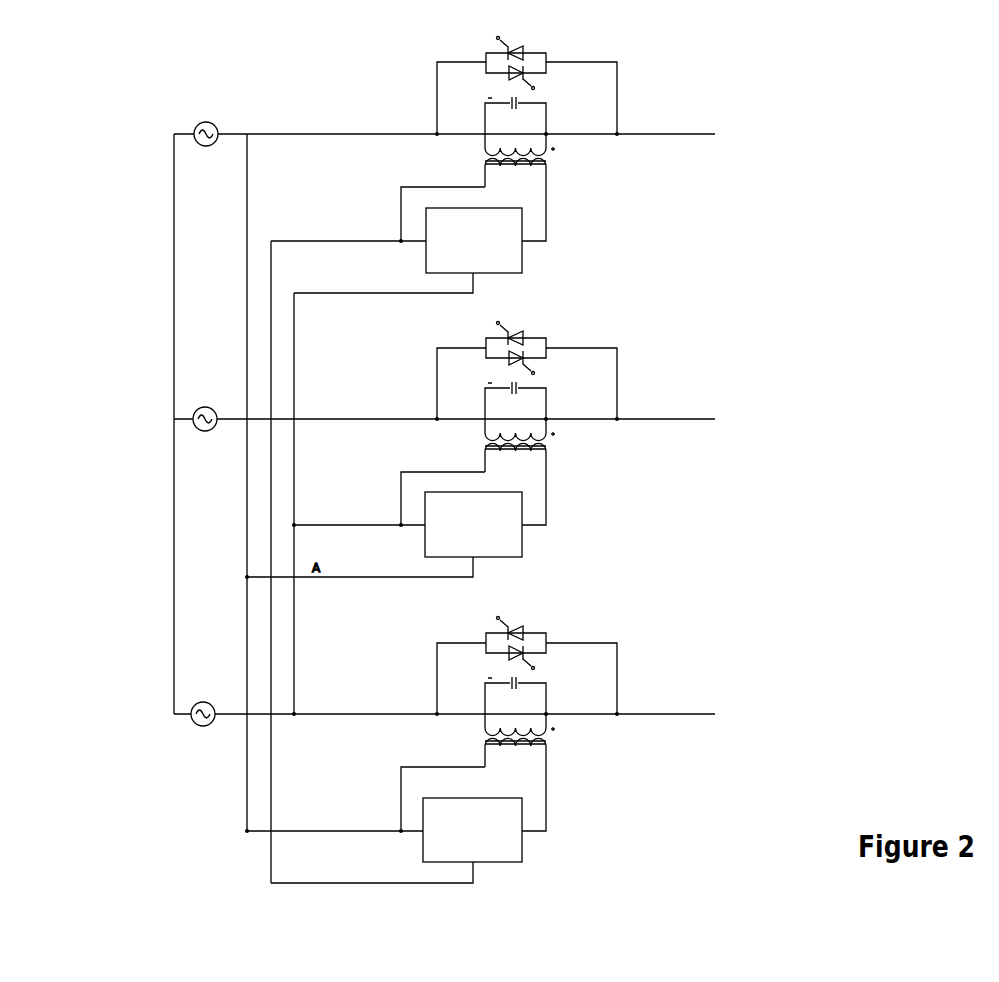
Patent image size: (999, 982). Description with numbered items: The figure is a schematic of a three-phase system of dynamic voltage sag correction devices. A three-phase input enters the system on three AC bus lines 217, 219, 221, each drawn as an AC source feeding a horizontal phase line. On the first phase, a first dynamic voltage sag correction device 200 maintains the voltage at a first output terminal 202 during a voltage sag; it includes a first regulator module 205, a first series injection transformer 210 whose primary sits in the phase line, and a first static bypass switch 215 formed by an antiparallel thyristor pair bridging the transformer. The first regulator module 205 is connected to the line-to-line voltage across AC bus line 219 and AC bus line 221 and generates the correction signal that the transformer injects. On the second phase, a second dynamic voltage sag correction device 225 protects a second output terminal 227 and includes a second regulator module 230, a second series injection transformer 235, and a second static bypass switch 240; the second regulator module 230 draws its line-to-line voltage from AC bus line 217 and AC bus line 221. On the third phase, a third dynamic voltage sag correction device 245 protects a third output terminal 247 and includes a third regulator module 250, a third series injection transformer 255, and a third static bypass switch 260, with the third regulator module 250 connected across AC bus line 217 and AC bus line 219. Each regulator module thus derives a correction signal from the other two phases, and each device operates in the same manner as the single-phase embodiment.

The first dynamic voltage sag correction device 200 is at (700, 282).
The first output terminal 202 is at (715, 134).
The first regulator module 205 is at (520, 260).
The first series injection transformer 210 is at (545, 162).
The first static bypass switch 215 is at (486, 54).
The AC bus line 217 is at (235, 132).
The AC bus line 219 is at (233, 417).
The AC bus line 221 is at (232, 712).
The second dynamic voltage sag correction device 225 is at (642, 524).
The second output terminal 227 is at (715, 419).
The second regulator module 230 is at (520, 542).
The second series injection transformer 235 is at (543, 445).
The second static bypass switch 240 is at (543, 336).
The third dynamic voltage sag correction device 245 is at (651, 795).
The third output terminal 247 is at (715, 714).
The third regulator module 250 is at (520, 846).
The third series injection transformer 255 is at (543, 740).
The third static bypass switch 260 is at (536, 631).